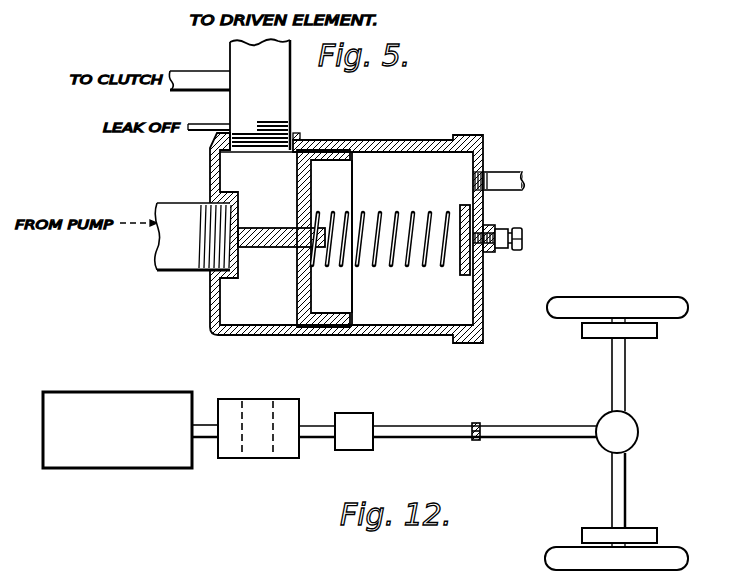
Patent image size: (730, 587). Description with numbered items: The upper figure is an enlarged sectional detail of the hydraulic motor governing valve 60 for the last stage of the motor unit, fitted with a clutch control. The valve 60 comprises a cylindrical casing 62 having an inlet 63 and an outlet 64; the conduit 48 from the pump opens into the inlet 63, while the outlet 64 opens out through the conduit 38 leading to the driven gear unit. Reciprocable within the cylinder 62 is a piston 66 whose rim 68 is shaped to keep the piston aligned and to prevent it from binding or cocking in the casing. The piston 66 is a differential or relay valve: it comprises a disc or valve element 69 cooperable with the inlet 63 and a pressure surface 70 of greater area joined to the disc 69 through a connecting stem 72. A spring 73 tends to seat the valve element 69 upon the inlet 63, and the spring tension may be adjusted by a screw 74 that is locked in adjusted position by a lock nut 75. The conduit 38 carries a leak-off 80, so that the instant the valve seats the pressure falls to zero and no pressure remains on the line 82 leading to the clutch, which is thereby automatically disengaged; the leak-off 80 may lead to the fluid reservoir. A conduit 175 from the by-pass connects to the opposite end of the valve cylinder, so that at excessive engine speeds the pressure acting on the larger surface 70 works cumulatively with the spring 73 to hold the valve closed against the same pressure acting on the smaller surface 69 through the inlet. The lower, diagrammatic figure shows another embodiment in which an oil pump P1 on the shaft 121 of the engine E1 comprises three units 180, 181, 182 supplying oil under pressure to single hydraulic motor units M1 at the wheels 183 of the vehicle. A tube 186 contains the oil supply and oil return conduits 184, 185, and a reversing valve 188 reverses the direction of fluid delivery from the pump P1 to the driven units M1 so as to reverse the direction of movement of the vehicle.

In FIG. 5, the conduit 38 is at (230, 52).
In FIG. 5, the line 82 is at (175, 86).
In FIG. 5, the leak-off 80 is at (195, 131).
In FIG. 5, the outlet 64 is at (300, 135).
In FIG. 5, the piston 66 is at (318, 146).
In FIG. 5, the cylindrical casing 62 is at (365, 145).
In FIG. 5, the valve 60 is at (425, 130).
In FIG. 5, the conduit 175 is at (505, 178).
In FIG. 5, the rim 68 is at (346, 170).
In FIG. 5, the pressure surface 70 is at (297, 178).
In FIG. 5, the connecting stem 72 is at (275, 243).
In FIG. 5, the spring 73 is at (406, 262).
In FIG. 5, the inlet 63 is at (215, 195).
In FIG. 5, the disc or valve element 69 is at (212, 282).
In FIG. 5, the conduit 48 is at (170, 251).
In FIG. 5, the screw 74 is at (517, 230).
In FIG. 5, the lock nut 75 is at (497, 252).
In FIG. 12, the engine E1 is at (117, 430).
In FIG. 12, the shaft 121 is at (207, 438).
In FIG. 12, the oil pump P1 is at (282, 459).
In FIG. 12, the pump unit 180 is at (226, 402).
In FIG. 12, the pump unit 181 is at (260, 404).
In FIG. 12, the pump unit 182 is at (287, 405).
In FIG. 12, the reversing valve 188 is at (362, 438).
In FIG. 12, the tube 186 is at (552, 427).
In FIG. 12, the oil supply conduit 184 is at (476, 421).
In FIG. 12, the oil return conduit 185 is at (474, 442).
In FIG. 12, the hydraulic motor unit M1 is at (652, 335).
In FIG. 12, the wheels 183 is at (659, 303).